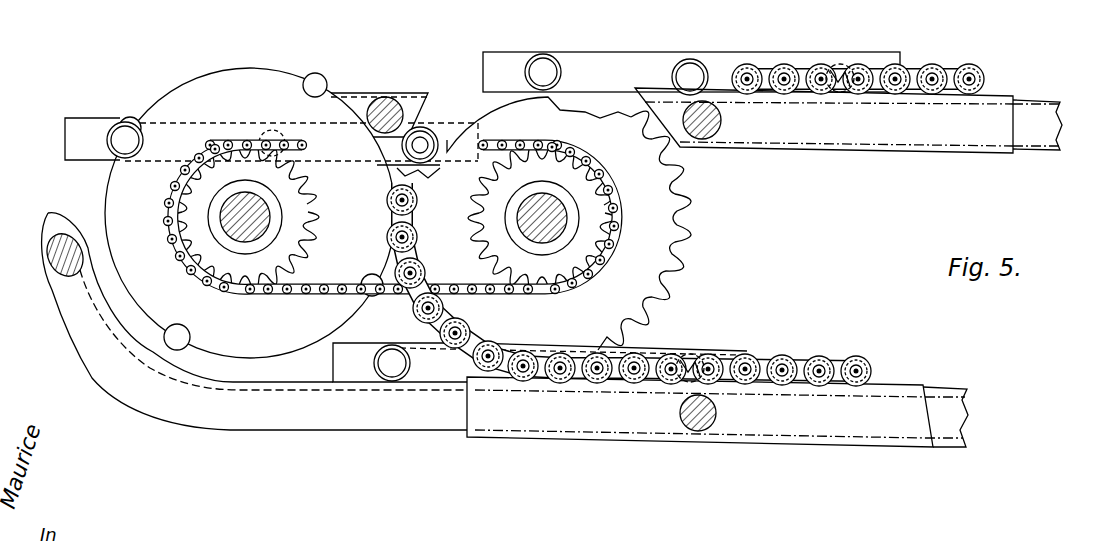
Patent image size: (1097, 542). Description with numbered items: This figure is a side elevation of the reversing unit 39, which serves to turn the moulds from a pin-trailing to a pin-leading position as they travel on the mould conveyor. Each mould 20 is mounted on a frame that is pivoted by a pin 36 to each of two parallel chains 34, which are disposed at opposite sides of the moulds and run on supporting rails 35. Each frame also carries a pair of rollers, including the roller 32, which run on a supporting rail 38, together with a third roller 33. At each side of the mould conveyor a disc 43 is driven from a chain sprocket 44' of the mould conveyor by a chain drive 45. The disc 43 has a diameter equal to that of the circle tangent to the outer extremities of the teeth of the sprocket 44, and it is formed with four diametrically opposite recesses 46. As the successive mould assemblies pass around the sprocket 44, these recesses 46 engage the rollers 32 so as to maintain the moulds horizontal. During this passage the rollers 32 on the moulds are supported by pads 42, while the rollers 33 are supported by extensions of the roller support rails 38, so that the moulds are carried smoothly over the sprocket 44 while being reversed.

The mould 20 is at (85, 113).
The roller 32 is at (108, 158).
The third roller 33 is at (272, 130).
The chain 34 is at (917, 68).
The supporting rail 35 is at (1002, 93).
The pin 36 is at (422, 143).
The supporting rail 38 is at (1042, 100).
The reversing unit 39 is at (323, 70).
The pad 42 is at (365, 92).
The disc 43 is at (195, 80).
The sprocket 44 is at (586, 223).
The chain sprocket 44' is at (524, 218).
The chain drive 45 is at (322, 298).
The recess 46 is at (305, 86).